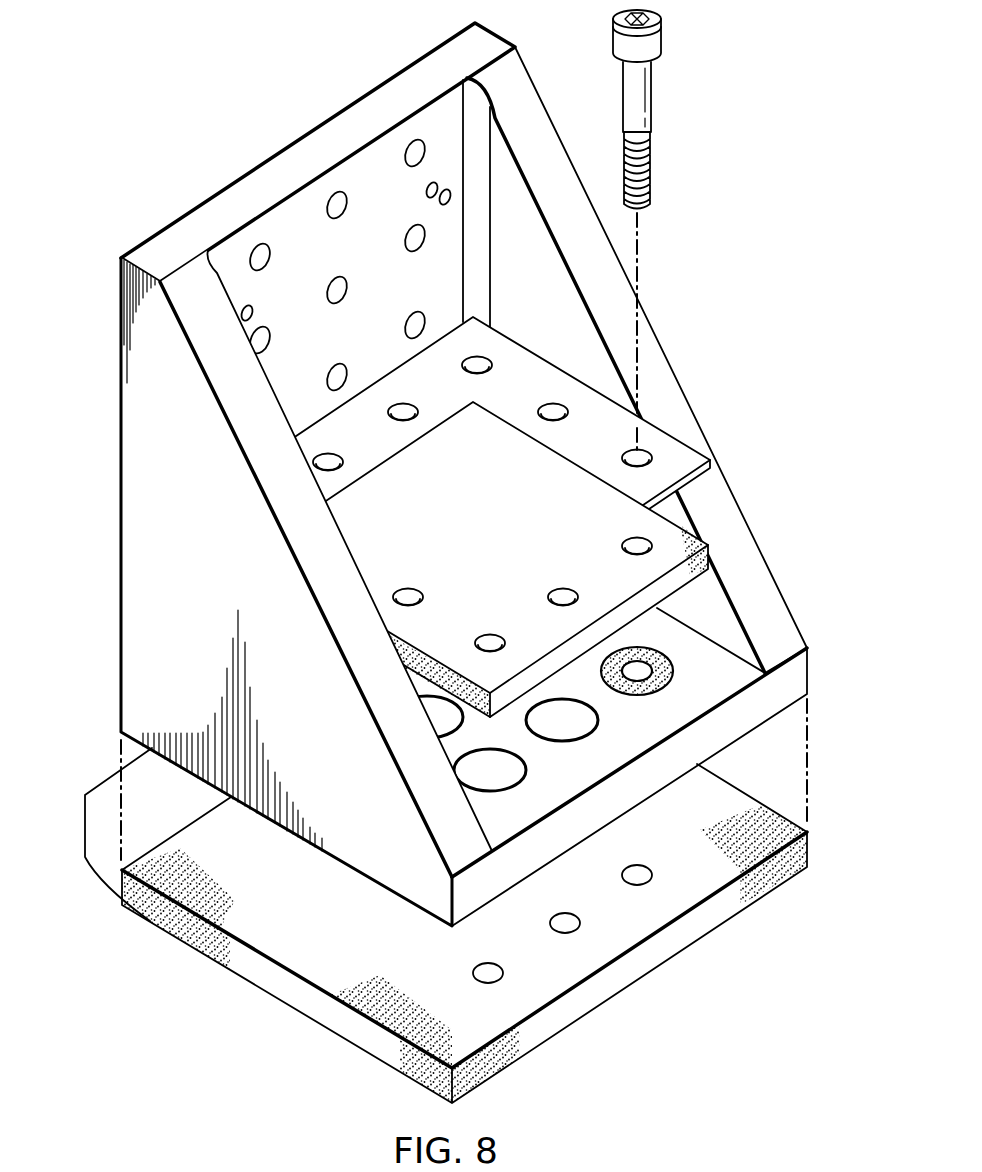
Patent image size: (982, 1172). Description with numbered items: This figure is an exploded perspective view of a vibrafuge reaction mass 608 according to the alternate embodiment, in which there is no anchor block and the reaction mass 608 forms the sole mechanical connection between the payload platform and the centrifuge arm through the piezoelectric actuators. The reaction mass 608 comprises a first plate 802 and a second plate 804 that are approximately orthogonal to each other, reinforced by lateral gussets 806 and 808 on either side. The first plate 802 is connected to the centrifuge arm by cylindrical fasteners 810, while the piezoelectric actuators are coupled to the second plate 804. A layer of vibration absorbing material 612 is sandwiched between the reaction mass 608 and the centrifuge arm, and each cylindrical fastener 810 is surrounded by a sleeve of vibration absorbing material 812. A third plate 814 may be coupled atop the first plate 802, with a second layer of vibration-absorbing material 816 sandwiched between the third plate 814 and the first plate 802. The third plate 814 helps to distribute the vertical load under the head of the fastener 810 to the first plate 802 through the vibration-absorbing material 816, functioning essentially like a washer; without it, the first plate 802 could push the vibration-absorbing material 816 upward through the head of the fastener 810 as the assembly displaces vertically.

The reaction mass 608 is at (188, 73).
The layer of vibration absorbing material 612 is at (698, 927).
The first plate 802 is at (615, 803).
The second plate 804 is at (302, 148).
The lateral gusset 806 is at (130, 497).
The lateral gusset 808 is at (529, 100).
The cylindrical fastener 810 is at (653, 101).
The sleeve of vibration absorbing material 812 is at (663, 668).
The third plate 814 is at (520, 363).
The second layer of vibration-absorbing material 816 is at (677, 543).